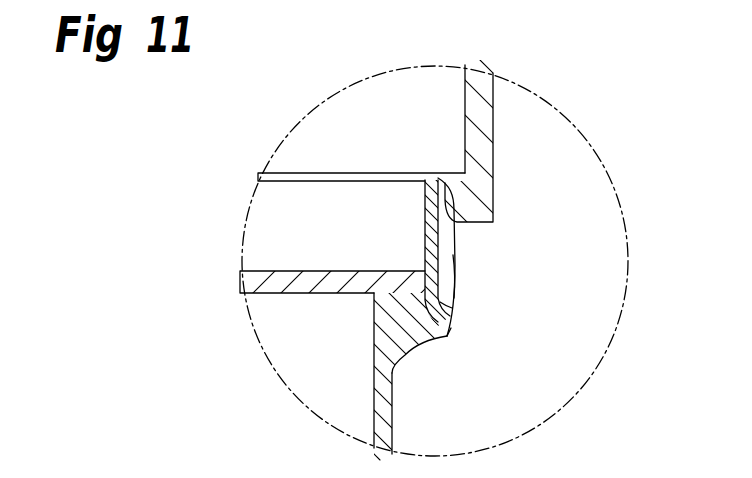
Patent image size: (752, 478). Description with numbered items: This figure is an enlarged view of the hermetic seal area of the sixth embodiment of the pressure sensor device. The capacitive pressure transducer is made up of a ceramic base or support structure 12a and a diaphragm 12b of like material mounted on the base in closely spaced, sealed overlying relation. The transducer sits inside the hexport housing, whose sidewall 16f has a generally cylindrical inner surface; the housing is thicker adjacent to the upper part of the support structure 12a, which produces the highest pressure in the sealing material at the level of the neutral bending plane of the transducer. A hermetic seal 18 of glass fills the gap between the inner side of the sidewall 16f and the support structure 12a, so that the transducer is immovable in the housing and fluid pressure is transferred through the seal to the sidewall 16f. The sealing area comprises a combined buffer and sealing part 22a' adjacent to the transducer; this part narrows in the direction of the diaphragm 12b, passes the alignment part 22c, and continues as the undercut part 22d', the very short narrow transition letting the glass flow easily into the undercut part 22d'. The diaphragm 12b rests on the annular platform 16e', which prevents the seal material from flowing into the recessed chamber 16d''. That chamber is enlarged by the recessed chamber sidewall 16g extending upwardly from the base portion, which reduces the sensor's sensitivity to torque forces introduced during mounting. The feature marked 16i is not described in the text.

The ceramic base or support structure 12a is at (323, 217).
The diaphragm 12b is at (305, 283).
The sidewall 16f is at (495, 167).
The hermetic seal 18 is at (436, 247).
The combined buffer and sealing part 22a' is at (507, 257).
The housing groove 16i is at (445, 276).
The alignment part 22c is at (440, 302).
The undercut part 22d' is at (472, 357).
The recessed chamber sidewall 16g is at (388, 385).
The annular platform 16e' is at (300, 260).
The recessed chamber 16d'' is at (323, 414).